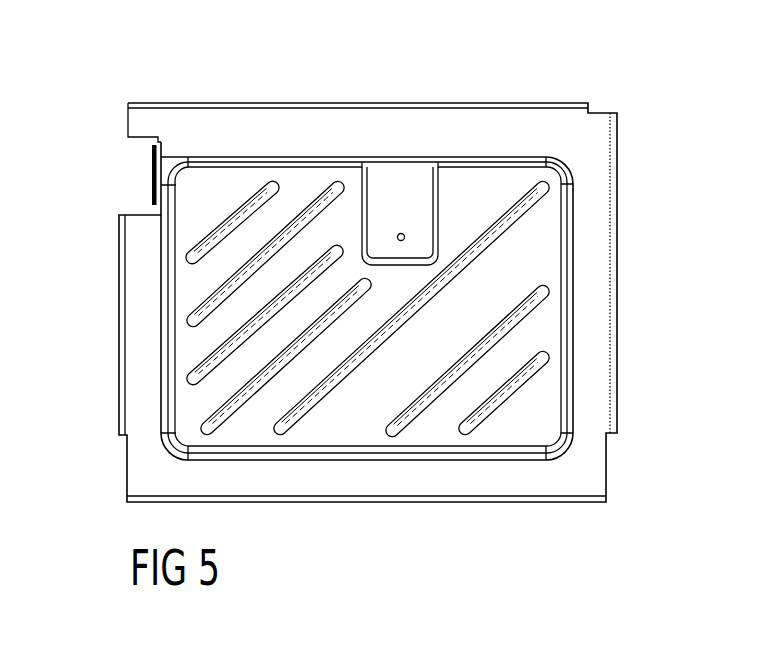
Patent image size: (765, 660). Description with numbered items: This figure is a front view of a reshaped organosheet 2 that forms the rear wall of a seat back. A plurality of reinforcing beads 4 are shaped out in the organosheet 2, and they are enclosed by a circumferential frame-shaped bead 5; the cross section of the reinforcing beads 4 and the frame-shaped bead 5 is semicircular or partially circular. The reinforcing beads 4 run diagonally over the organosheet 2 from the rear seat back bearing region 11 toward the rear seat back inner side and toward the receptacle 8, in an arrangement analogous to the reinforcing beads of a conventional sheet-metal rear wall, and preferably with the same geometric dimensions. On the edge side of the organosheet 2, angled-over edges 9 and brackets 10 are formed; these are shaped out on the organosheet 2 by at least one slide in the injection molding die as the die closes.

The organosheet 2 is at (595, 140).
The reinforcing beads 4 is at (190, 322).
The frame-shaped bead 5 is at (570, 339).
The receptacle 8 is at (400, 175).
The angled-over edges 9 is at (292, 103).
The brackets 10 is at (150, 170).
The rear seat back bearing region 11 is at (127, 473).